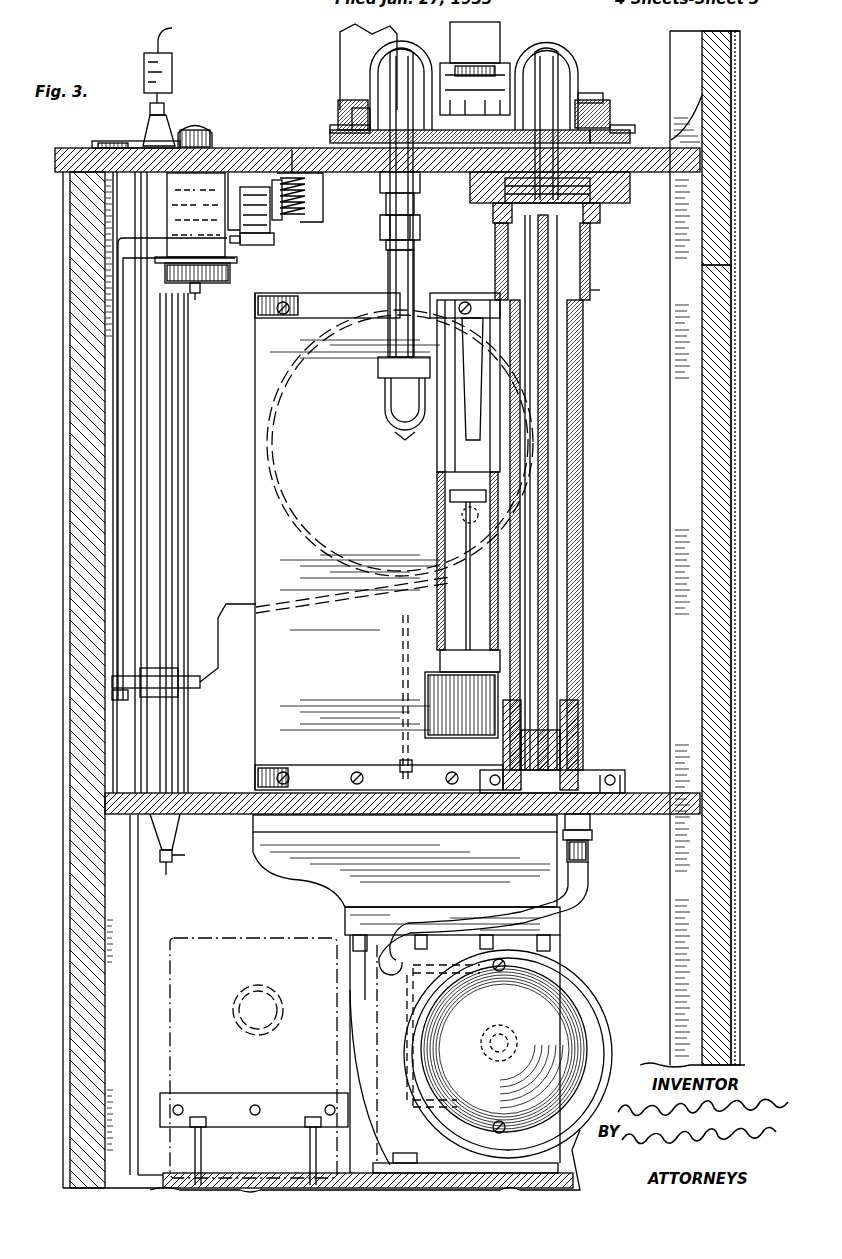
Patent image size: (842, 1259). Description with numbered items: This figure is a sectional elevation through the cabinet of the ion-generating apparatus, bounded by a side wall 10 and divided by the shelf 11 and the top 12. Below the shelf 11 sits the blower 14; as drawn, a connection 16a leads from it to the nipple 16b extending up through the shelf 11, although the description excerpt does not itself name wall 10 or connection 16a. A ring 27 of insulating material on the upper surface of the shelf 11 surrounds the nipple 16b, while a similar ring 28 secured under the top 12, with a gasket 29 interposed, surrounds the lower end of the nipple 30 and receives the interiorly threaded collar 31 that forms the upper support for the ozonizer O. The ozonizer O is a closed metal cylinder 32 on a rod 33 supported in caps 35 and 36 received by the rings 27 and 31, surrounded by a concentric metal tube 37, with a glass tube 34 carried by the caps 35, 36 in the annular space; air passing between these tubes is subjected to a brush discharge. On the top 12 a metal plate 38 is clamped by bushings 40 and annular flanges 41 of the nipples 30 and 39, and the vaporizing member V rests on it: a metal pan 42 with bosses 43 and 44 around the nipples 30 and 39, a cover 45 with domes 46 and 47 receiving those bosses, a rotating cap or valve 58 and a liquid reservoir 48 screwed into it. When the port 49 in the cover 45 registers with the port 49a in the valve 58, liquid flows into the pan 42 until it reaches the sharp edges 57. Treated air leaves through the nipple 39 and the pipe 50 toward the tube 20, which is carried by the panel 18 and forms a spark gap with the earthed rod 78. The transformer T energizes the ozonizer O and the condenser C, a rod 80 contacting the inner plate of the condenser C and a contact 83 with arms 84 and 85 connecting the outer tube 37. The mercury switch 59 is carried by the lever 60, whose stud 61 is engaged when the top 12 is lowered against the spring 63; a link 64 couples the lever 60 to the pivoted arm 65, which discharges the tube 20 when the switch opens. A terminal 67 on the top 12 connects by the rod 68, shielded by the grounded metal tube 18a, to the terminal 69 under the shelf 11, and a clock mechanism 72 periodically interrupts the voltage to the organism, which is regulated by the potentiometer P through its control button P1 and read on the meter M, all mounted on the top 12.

The left cabinet wall 10 is at (70, 289).
The shelf 11 is at (660, 815).
The top 12 is at (255, 148).
The blower 14 is at (577, 975).
The flexible hose 16a is at (568, 905).
The nipple 16b is at (592, 836).
The panel 18 is at (255, 546).
The metal tube 18a is at (175, 471).
The tube 20 is at (312, 550).
The ring of insulating material 27 is at (625, 778).
The ring 28 is at (600, 214).
The gasket 29 is at (642, 146).
The nipple 30 is at (590, 100).
The interiorly threaded collar 31 is at (595, 242).
The closed metal cylinder 32 is at (565, 420).
The rod 33 is at (548, 583).
The glass tube 34 is at (583, 458).
The cap 35 is at (576, 738).
The cap 36 is at (592, 291).
The metal tube 37 is at (587, 653).
The metal plate 38 is at (612, 130).
The nipple 39 is at (404, 82).
The bushings 40 is at (380, 183).
The annular flanges 41 is at (345, 126).
The metal pan 42 is at (352, 98).
The boss 43 is at (576, 78).
The boss 44 is at (447, 62).
The cover 45 is at (352, 80).
The dome 46 is at (548, 50).
The dome 47 is at (367, 77).
The liquid reservoir 48 is at (475, 68).
The port 49 is at (470, 60).
The port 49a is at (505, 70).
The pipe 50 is at (385, 278).
The cut-away places 57 is at (462, 150).
The rotating cap or valve 58 is at (456, 75).
The mercury switch 59 is at (262, 266).
The lever 60 is at (272, 242).
The stud 61 is at (292, 156).
The spring 63 is at (320, 216).
The link 64 is at (120, 372).
The pivoted arm 65 is at (205, 676).
The terminal 67 is at (165, 108).
The rod 68 is at (168, 852).
The second terminal 69 is at (178, 833).
The clock mechanism 72 is at (172, 68).
The rod 78 is at (402, 668).
The rod 80 is at (455, 622).
The contact 83 is at (470, 300).
The arm 84 is at (466, 415).
The arm 85 is at (492, 345).
The voltmeter M is at (128, 141).
The potentiometer P is at (222, 286).
The control button P1 is at (212, 132).
The vaporizing member V is at (617, 84).
The ozonizer O is at (589, 509).
The condenser C is at (437, 596).
The transformer T is at (262, 946).